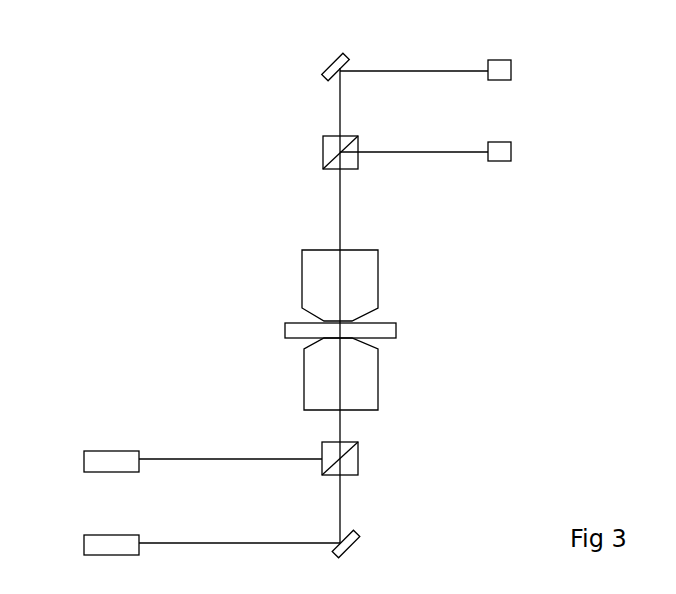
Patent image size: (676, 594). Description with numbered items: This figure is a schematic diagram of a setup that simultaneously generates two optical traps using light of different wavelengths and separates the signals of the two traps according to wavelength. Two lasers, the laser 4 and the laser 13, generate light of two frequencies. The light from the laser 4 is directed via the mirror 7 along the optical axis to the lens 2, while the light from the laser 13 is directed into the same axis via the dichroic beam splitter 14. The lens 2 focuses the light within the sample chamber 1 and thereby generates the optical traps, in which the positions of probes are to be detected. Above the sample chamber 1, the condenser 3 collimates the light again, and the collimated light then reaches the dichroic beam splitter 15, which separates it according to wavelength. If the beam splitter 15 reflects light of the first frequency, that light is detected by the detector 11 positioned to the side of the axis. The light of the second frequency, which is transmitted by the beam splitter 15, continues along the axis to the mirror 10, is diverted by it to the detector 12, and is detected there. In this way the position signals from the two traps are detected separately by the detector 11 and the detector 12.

The sample chamber 1 is at (292, 331).
The lens 2 is at (316, 394).
The condenser 3 is at (310, 283).
The laser 4 is at (92, 545).
The mirror 7 is at (355, 540).
The mirror 10 is at (332, 62).
The detector 11 is at (503, 150).
The detector 12 is at (503, 69).
The laser 13 is at (93, 462).
The dichroic beam splitter 14 is at (352, 460).
The dichroic beam splitter 15 is at (328, 151).